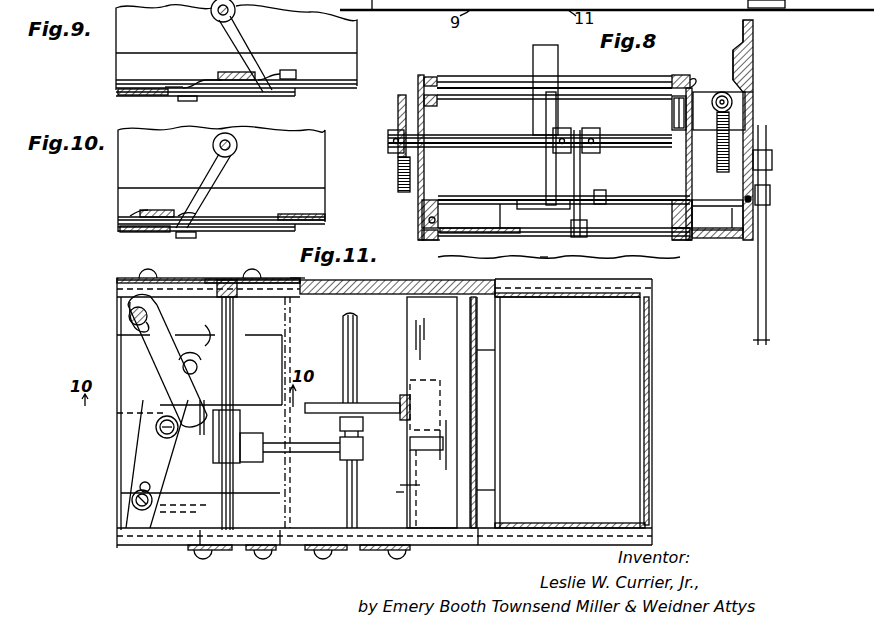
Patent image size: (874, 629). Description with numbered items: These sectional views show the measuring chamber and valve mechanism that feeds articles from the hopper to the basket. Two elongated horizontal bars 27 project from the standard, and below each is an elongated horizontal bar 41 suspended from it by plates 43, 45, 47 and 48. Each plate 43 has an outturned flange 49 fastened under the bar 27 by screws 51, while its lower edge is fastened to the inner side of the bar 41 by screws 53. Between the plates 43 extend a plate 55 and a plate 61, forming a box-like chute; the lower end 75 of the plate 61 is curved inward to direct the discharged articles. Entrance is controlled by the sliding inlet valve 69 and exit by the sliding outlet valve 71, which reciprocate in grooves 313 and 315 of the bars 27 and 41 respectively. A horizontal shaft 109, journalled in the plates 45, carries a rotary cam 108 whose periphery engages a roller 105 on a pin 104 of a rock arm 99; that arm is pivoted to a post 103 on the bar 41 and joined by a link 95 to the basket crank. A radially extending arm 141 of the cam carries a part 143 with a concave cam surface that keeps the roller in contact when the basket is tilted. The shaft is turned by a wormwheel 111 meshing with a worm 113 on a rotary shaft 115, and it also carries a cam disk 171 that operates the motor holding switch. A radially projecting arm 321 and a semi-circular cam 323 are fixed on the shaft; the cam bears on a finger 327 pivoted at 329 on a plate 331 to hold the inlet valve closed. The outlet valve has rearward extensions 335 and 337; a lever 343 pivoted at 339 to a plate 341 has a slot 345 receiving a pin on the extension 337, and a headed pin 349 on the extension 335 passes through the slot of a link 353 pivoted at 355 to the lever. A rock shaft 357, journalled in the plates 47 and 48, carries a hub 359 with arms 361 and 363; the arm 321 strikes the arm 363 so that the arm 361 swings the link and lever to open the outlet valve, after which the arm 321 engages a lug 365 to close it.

In FIG. 8, the elongated horizontal bar 27 is at (422, 76).
In FIG. 11, the elongated horizontal bar 27 is at (652, 290).
In FIG. 8, the elongated horizontal bar 41 is at (428, 242).
In FIG. 11, the elongated horizontal bar 41 is at (296, 550).
In FIG. 8, the plate 43 is at (443, 180).
In FIG. 11, the plate 43 is at (553, 297).
In FIG. 8, the plate 45 is at (410, 96).
In FIG. 11, the plate 45 is at (310, 278).
In FIG. 11, the plate 47 is at (230, 550).
In FIG. 11, the plate 48 is at (203, 278).
In FIG. 8, the outturned flange 49 is at (437, 102).
In FIG. 8, the screws 51 is at (675, 108).
In FIG. 8, the screws 53 is at (438, 212).
In FIG. 11, the plate 55 is at (478, 387).
In FIG. 11, the plate 61 is at (640, 380).
In FIG. 8, the sliding inlet valve 69 is at (480, 85).
In FIG. 8, the sliding outlet valve 71 is at (498, 217).
In FIG. 11, the sliding outlet valve 71 is at (282, 362).
In FIG. 8, the lower end of plate 61 75 is at (550, 264).
In FIG. 8, the link 95 is at (758, 296).
In FIG. 8, the rock arm 99 is at (757, 230).
In FIG. 8, the post 103 is at (713, 228).
In FIG. 8, the laterally projecting pin 104 is at (772, 160).
In FIG. 8, the roller 105 is at (734, 230).
In FIG. 8, the rotary cam 108 is at (754, 110).
In FIG. 8, the horizontal shaft 109 is at (510, 147).
In FIG. 11, the horizontal shaft 109 is at (348, 360).
In FIG. 8, the wormwheel 111 is at (722, 140).
In FIG. 8, the worm 113 is at (718, 91).
In FIG. 8, the rotary shaft 115 is at (753, 88).
In FIG. 8, the radially extending arm 141 is at (753, 58).
In FIG. 8, the part with concave cam surface 143 is at (753, 34).
In FIG. 8, the cam disk 171 is at (396, 117).
In FIG. 8, the groove 313 is at (431, 77).
In FIG. 8, the groove 315 is at (420, 230).
In FIG. 11, the radially projecting arm 321 is at (320, 443).
In FIG. 8, the semi-circular cam 323 is at (556, 108).
In FIG. 11, the semi-circular cam 323 is at (395, 424).
In FIG. 8, the finger 327 is at (558, 61).
In FIG. 11, the finger 327 is at (402, 395).
In FIG. 8, the pivot 329 is at (542, 215).
In FIG. 8, the plate 331 is at (622, 185).
In FIG. 11, the plate 331 is at (412, 332).
In FIG. 8, the rearwardly extending portion 335 is at (455, 236).
In FIG. 11, the rearwardly extending portion 335 is at (199, 369).
In FIG. 8, the rearwardly extending portion 337 is at (672, 232).
In FIG. 11, the rearwardly extending portion 337 is at (192, 493).
In FIG. 9, the pivot 339 is at (180, 108).
In FIG. 10, the pivot 339 is at (184, 238).
In FIG. 11, the pivot 339 is at (197, 365).
In FIG. 9, the plate 341 is at (118, 92).
In FIG. 10, the plate 341 is at (118, 230).
In FIG. 11, the plate 341 is at (125, 453).
In FIG. 9, the lever 343 is at (185, 82).
In FIG. 9, the slot 345 is at (215, 74).
In FIG. 10, the slot 345 is at (200, 206).
In FIG. 11, the slot 345 is at (140, 485).
In FIG. 9, the headed pin 349 is at (290, 70).
In FIG. 11, the headed pin 349 is at (128, 318).
In FIG. 9, the link 353 is at (222, 78).
In FIG. 10, the link 353 is at (168, 210).
In FIG. 11, the link 353 is at (140, 355).
In FIG. 11, the pivotal connection 355 is at (156, 428).
In FIG. 9, the rock shaft 357 is at (236, 12).
In FIG. 10, the rock shaft 357 is at (238, 146).
In FIG. 11, the rock shaft 357 is at (233, 387).
In FIG. 11, the hub 359 is at (240, 420).
In FIG. 9, the radially extending arm 361 is at (252, 44).
In FIG. 8, the radially extending arm 361 is at (615, 208).
In FIG. 11, the radially extending arm 361 is at (197, 428).
In FIG. 11, the radially extending arm 363 is at (255, 462).
In FIG. 8, the lug 365 is at (571, 240).
In FIG. 11, the lug 365 is at (347, 478).